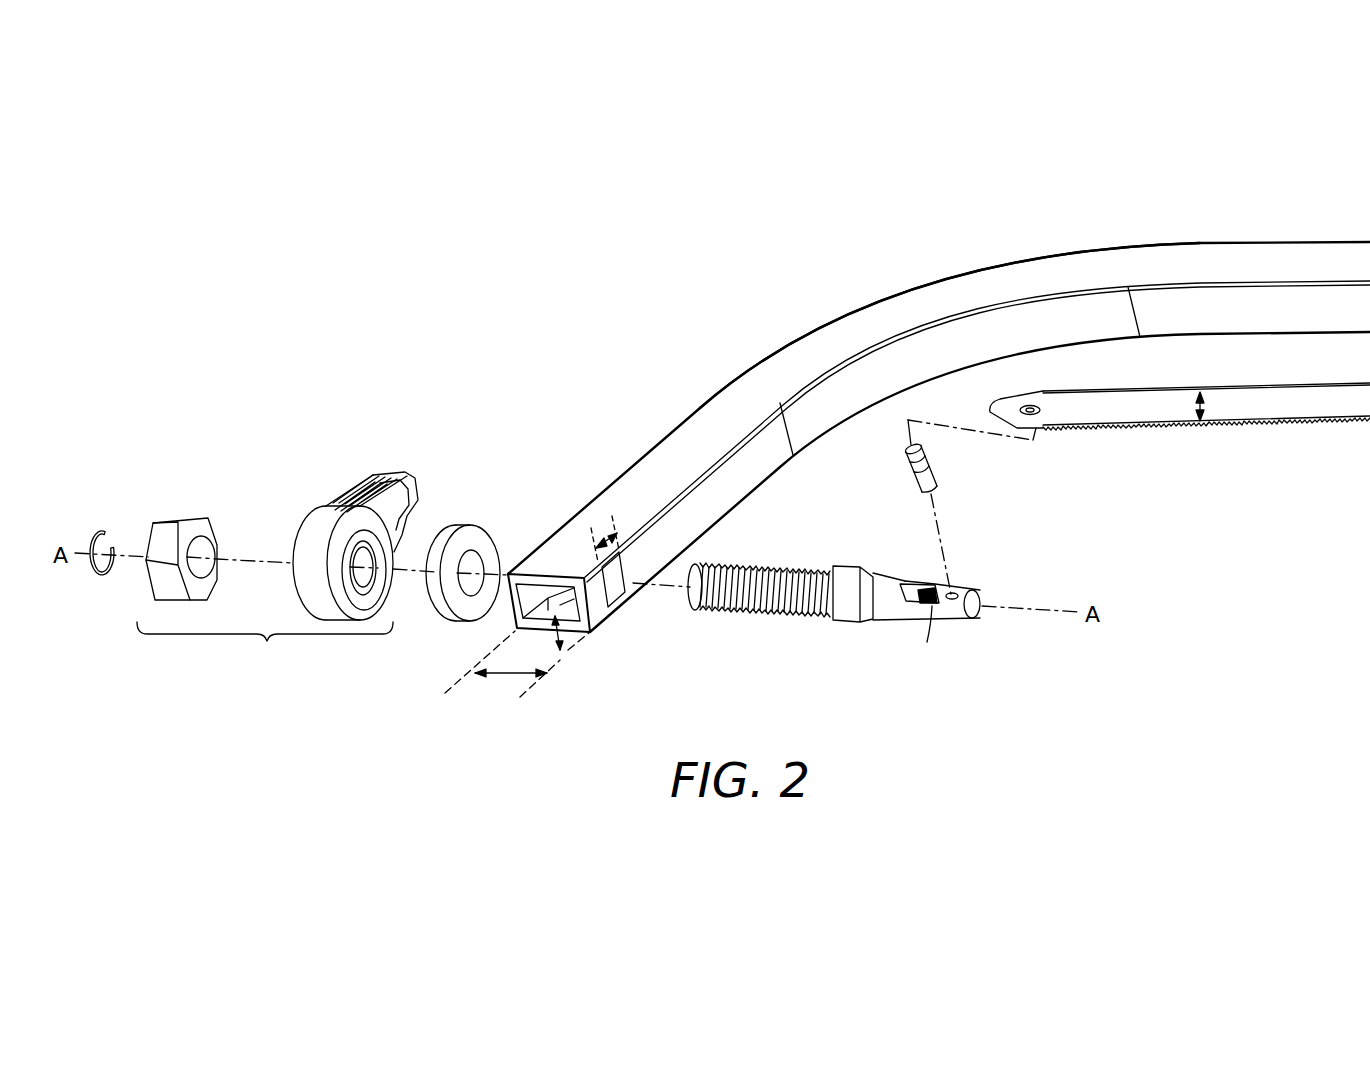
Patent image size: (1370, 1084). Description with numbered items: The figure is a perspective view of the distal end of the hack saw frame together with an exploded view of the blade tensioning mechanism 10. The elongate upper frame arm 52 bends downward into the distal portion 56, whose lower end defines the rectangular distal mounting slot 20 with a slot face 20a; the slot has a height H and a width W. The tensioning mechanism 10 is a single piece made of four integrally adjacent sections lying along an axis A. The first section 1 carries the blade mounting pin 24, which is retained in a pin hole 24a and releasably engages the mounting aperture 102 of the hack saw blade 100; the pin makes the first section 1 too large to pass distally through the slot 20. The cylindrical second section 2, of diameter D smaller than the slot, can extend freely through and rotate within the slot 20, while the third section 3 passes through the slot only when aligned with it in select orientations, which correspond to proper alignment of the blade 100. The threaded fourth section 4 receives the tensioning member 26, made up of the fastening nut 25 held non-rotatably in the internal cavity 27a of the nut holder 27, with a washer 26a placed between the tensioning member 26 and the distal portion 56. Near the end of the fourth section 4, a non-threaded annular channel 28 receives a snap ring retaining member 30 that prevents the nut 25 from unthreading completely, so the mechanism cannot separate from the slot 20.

The first section 1 is at (943, 612).
The second section 2 is at (883, 610).
The third section 3 is at (845, 615).
The fourth section 4 is at (742, 612).
The tensioning mechanism 10 is at (848, 554).
The distal mounting slot 20 is at (612, 597).
The face of the slot 20a is at (628, 577).
The blade mounting pin 24 is at (932, 455).
The pin hole 24a is at (960, 595).
The fastening nut 25 is at (187, 521).
The tensioning member 26 is at (287, 558).
The washer 26a is at (476, 540).
The nut holder 27 is at (393, 493).
The internal cavity 27a is at (360, 552).
The annular channel 28 is at (700, 566).
The retaining member 30 is at (100, 540).
The upper frame arm 52 is at (1273, 242).
The distal portion 56 is at (740, 373).
The hack saw blade 100 is at (1280, 425).
The mounting aperture 102 is at (1031, 404).